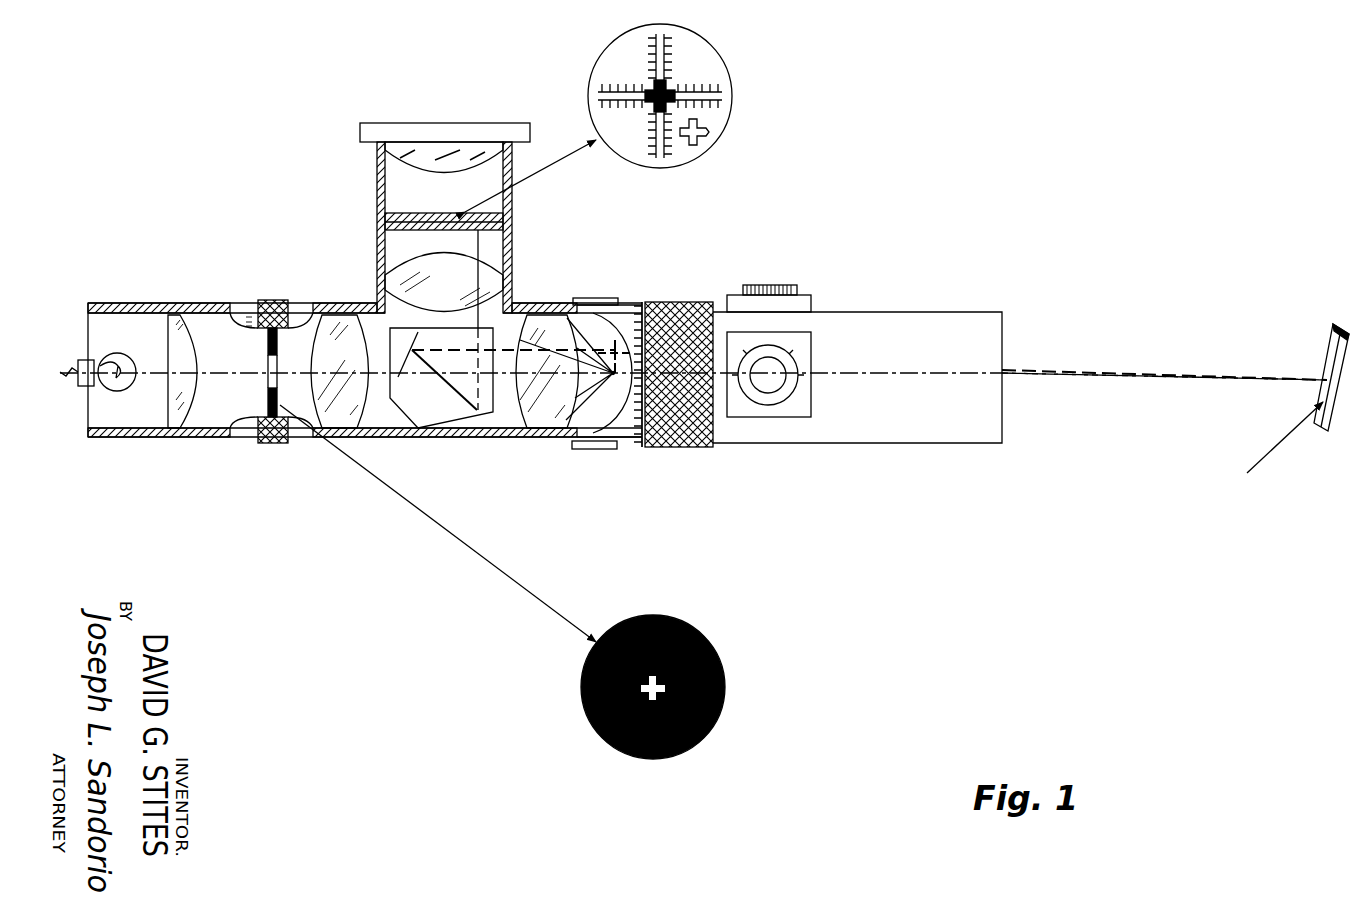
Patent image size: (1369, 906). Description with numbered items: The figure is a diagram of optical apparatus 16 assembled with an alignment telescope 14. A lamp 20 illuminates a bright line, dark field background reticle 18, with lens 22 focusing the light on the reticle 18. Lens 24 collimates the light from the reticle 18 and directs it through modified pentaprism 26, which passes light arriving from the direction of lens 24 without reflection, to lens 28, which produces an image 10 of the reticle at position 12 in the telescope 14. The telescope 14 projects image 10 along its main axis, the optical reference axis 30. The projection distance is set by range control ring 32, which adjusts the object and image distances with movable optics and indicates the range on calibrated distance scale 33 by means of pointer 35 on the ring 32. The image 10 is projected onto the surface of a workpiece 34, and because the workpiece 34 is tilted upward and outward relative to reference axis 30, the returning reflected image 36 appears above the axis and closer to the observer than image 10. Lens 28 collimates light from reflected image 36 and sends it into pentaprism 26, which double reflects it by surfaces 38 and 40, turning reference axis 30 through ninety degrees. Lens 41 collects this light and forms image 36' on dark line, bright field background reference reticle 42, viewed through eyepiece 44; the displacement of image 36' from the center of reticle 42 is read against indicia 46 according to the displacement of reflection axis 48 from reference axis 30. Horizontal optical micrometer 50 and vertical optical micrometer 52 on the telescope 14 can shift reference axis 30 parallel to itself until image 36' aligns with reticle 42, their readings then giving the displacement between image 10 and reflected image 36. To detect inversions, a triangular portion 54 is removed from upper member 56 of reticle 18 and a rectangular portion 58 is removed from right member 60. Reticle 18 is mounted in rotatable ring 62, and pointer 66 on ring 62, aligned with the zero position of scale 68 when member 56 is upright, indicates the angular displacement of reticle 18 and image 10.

The image of reticle 10 is at (580, 373).
The position 12 is at (613, 390).
The alignment telescope 14 is at (825, 445).
The optical apparatus 16 is at (470, 440).
The reticle 18 is at (268, 352).
The lamp 20 is at (120, 392).
The lens 22 is at (195, 390).
The lens 24 is at (362, 355).
The modified pentaprism 26 is at (429, 379).
The lens 28 is at (522, 400).
The optical reference axis 30 is at (1083, 383).
The range control ring 32 is at (680, 302).
The calibrated distance scale 33 is at (597, 298).
The workpiece 34 is at (1337, 324).
The pointer 35 is at (645, 302).
The reflected image 36 is at (607, 343).
The image on reference reticle 36' is at (710, 150).
The reflecting surface 38 is at (408, 372).
The reflecting surface 40 is at (458, 414).
The lens 41 is at (405, 268).
The reference reticle 42 is at (425, 213).
The eyepiece 44 is at (448, 165).
The indicia 46 is at (652, 73).
The reflection axis 48 is at (482, 307).
The horizontal optical micrometer 50 is at (800, 400).
The vertical optical micrometer 52 is at (805, 282).
The triangular portion 54 is at (648, 682).
The upper member 56 is at (687, 667).
The rectangular portion 58 is at (688, 709).
The right member 60 is at (627, 709).
The rotatable ring 62 is at (270, 445).
The pointer 66 is at (263, 298).
The scale 68 is at (233, 310).